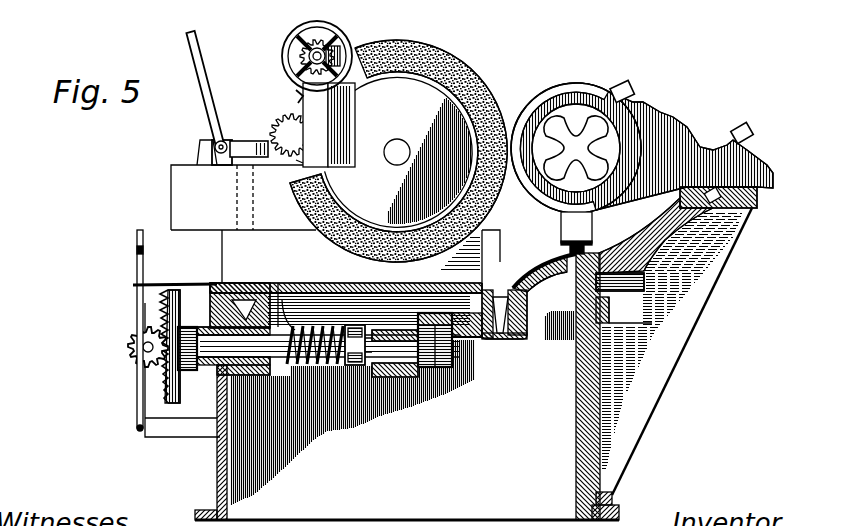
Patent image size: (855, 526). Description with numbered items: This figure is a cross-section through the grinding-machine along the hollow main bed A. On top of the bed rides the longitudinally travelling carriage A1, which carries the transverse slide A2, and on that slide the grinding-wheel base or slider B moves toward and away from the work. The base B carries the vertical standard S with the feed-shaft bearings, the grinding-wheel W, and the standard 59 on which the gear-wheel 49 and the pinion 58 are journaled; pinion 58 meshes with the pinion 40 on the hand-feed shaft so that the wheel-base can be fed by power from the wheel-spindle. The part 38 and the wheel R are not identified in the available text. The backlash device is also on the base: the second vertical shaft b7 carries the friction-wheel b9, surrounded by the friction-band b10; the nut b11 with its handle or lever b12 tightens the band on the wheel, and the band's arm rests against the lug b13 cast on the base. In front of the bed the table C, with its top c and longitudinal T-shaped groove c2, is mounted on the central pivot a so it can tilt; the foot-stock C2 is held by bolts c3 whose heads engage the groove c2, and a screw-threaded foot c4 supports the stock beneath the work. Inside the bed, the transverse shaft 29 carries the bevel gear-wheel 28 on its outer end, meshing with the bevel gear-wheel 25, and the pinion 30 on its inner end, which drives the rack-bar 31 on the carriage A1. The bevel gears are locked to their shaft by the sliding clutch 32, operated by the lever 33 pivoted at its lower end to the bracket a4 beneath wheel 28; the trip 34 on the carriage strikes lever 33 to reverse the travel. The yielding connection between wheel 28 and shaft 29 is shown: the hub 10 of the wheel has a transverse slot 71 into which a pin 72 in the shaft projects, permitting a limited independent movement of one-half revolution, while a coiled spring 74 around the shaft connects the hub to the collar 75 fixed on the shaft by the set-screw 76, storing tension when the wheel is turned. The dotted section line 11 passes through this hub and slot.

The main bed A is at (468, 367).
The table C is at (675, 346).
The T-shaped groove c2 is at (735, 214).
The top of table c is at (704, 208).
The pivot a is at (620, 282).
The grinding-wheel base B is at (263, 197).
The second vertical shaft b7 is at (237, 192).
The slide A2 is at (361, 256).
The carriage A1 is at (290, 283).
The pin 72 is at (270, 281).
The section line 11 is at (278, 283).
The transverse slot 71 is at (292, 320).
The hub 10 is at (208, 367).
The coiled spring 74 is at (330, 362).
The collar 75 is at (357, 363).
The set-screw 76 is at (367, 345).
The transverse shaft 29 is at (402, 348).
The rack-bar 31 is at (432, 348).
The pinion 30 is at (446, 370).
The bracket a4 is at (177, 427).
The bevel gear-wheel 28 is at (160, 295).
The bevel gear-wheel 25 is at (133, 353).
The lever 33 is at (137, 258).
The trip 34 is at (160, 282).
The grinding-wheel W is at (462, 72).
The gear-wheel 49 is at (290, 121).
The standard 59 is at (315, 125).
The vertical standard S is at (352, 111).
The pinion 58 is at (300, 93).
The friction-wheel b9 is at (291, 162).
The pinion 40 is at (322, 50).
The sliding clutch 32 is at (341, 52).
The hand wheel 38 is at (285, 47).
The lug b13 is at (197, 150).
The friction-band b10 is at (248, 142).
The handle or lever b12 is at (197, 60).
The nut b11 is at (225, 141).
The foot-stock C2 is at (684, 151).
The bolts c3 is at (748, 117).
The ratchet wheel R is at (580, 84).
The screw-threaded foot c4 is at (588, 249).